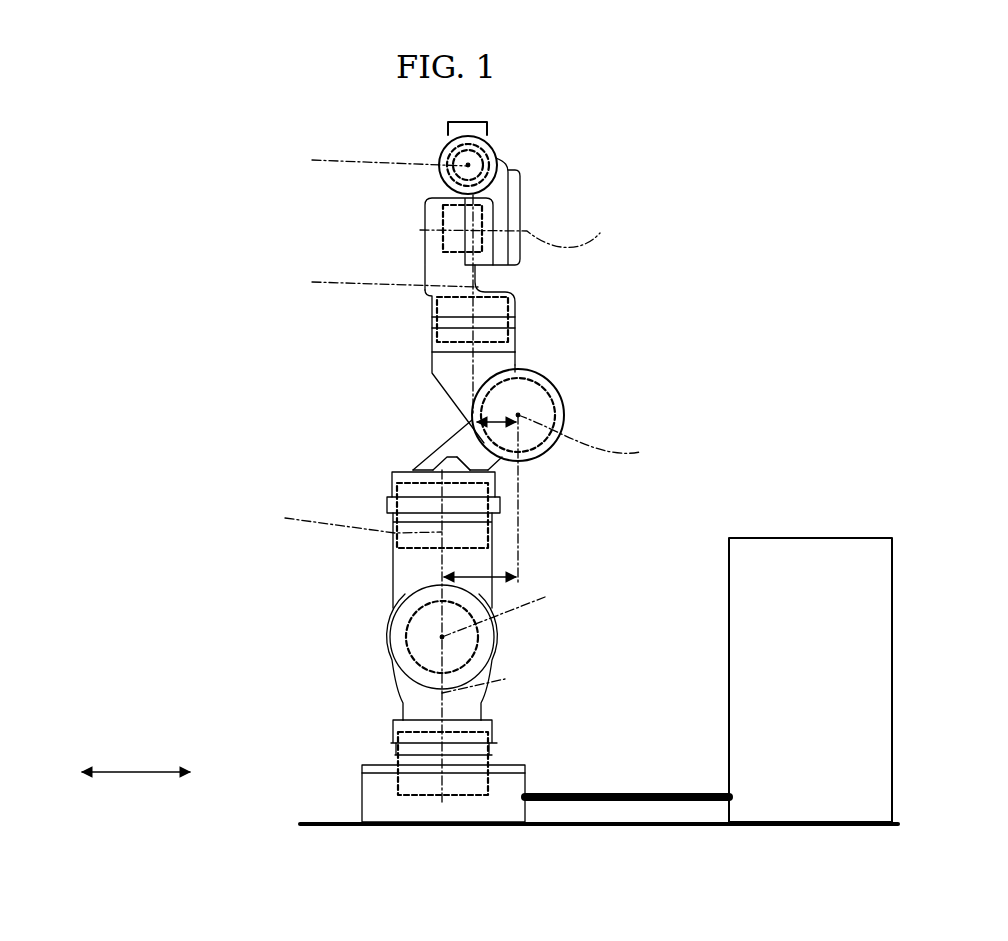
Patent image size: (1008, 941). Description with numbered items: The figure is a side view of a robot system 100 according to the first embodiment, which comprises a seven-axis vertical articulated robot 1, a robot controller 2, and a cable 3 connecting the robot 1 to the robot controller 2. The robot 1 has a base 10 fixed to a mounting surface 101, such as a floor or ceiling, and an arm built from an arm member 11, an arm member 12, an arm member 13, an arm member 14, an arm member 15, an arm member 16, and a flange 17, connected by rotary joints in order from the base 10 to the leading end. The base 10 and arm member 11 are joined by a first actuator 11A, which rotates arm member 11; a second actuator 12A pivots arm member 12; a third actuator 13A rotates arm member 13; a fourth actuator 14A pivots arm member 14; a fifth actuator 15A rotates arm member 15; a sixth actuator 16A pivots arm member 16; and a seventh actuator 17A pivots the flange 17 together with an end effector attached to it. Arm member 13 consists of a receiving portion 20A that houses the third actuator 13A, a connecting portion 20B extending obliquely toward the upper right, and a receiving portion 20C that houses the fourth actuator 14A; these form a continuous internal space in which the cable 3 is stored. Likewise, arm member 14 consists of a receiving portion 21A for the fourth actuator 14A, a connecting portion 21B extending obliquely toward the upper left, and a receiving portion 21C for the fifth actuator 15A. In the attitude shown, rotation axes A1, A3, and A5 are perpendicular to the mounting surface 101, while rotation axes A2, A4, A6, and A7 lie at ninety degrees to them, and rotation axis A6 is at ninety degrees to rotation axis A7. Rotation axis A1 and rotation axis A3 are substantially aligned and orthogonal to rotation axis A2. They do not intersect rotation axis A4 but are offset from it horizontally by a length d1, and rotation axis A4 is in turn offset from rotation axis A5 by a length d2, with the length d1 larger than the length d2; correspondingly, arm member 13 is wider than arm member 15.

The robot system 100 is at (215, 498).
The robot 1 is at (534, 694).
The robot controller 2 is at (807, 538).
The cable 3 is at (617, 792).
The base 10 is at (518, 800).
The arm member (first member) 11 is at (379, 694).
The first actuator (first joint) 11A is at (392, 750).
The arm member (second member) 12 is at (380, 601).
The second actuator (second joint) 12A is at (400, 572).
The arm member (third member) 13 is at (382, 445).
The third actuator (third joint) 13A is at (388, 500).
The arm member (fourth member) 14 is at (552, 383).
The fourth actuator (fourth joint) 14A is at (567, 395).
The arm member (fifth member) 15 is at (478, 348).
The fifth actuator (fifth joint) 15A is at (517, 300).
The arm member (sixth member) 16 is at (463, 224).
The sixth actuator (sixth joint) 16A is at (443, 228).
The flange (seventh member) 17 is at (479, 153).
The seventh actuator (seventh joint) 17A is at (495, 134).
The receiving portion A 20A is at (413, 470).
The connecting portion A 20B is at (462, 428).
The receiving portion B 20C is at (476, 383).
The receiving portion A 21A is at (547, 372).
The connecting portion B 21B is at (520, 362).
The receiving portion D 21C is at (520, 345).
The mounting surface 101 is at (320, 822).
The rotation axis A1 is at (487, 676).
The rotation axis A2 is at (504, 607).
The rotation axis A3 is at (349, 637).
The rotation axis A4 is at (593, 500).
The rotation axis A5 is at (380, 305).
The rotation axis A6 is at (523, 235).
The rotation axis A7 is at (375, 162).
The length d1 is at (480, 566).
The length d2 is at (496, 409).